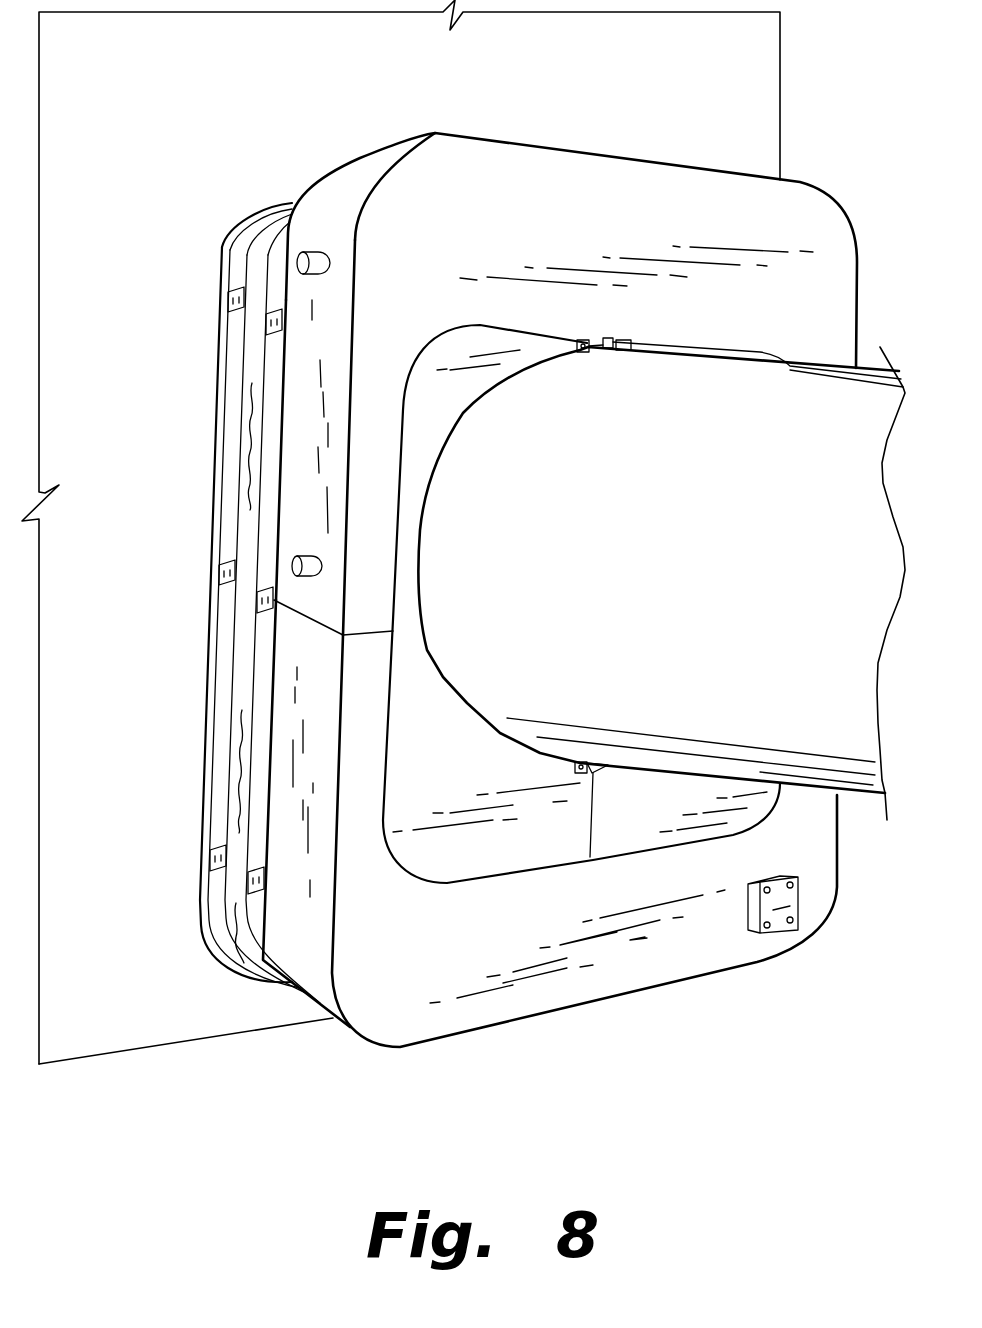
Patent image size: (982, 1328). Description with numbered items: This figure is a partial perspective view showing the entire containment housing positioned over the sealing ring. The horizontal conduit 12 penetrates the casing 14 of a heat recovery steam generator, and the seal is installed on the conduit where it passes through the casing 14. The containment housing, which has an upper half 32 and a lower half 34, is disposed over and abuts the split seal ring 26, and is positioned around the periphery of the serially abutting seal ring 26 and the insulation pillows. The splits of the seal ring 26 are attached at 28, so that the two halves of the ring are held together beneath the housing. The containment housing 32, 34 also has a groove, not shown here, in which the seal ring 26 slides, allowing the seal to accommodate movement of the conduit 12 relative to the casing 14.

The horizontal conduit 12 is at (595, 553).
The casing 14 is at (157, 138).
The split seal ring 26 is at (466, 785).
The attachment of seal ring splits 28 is at (572, 348).
The upper half of containment housing 32 is at (572, 223).
The lower half of containment housing 34 is at (442, 972).